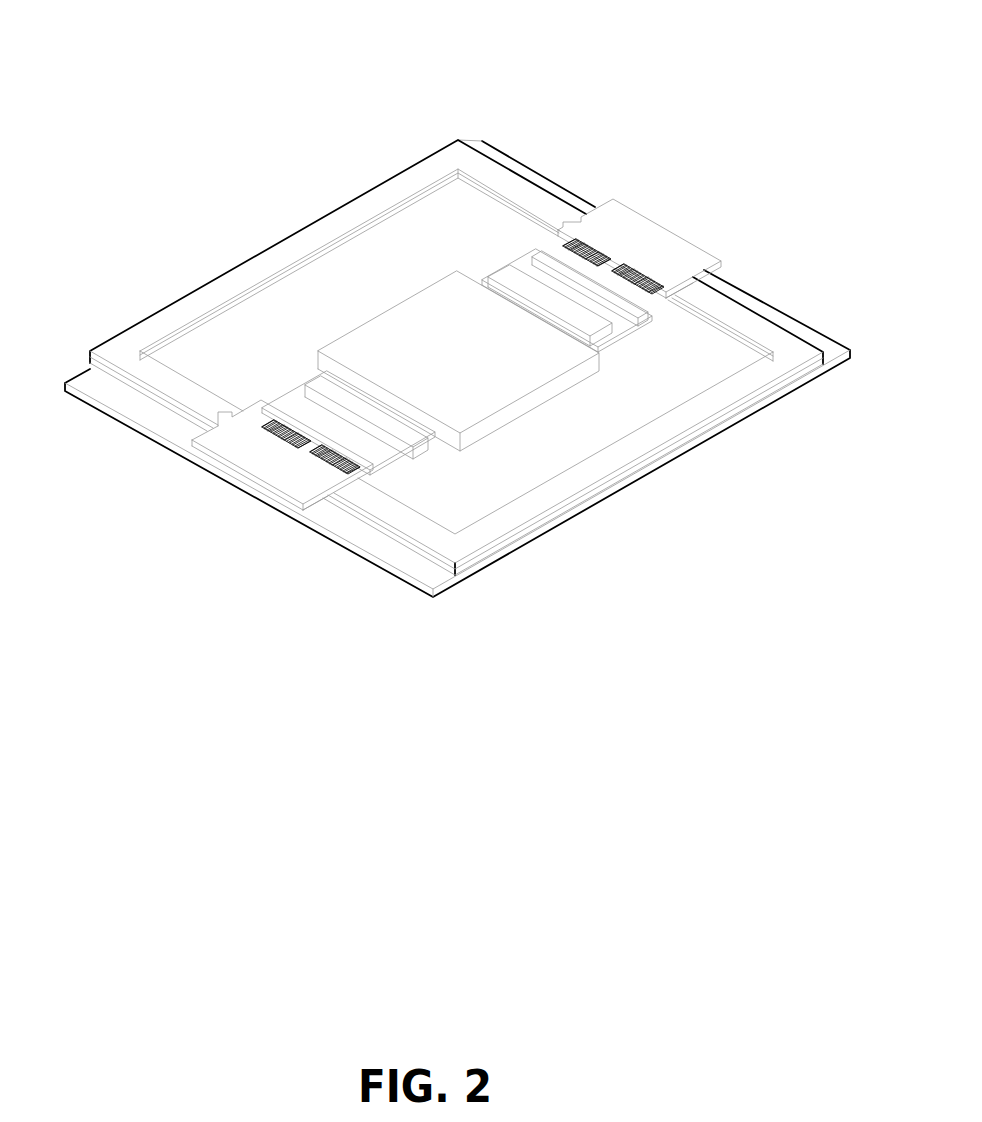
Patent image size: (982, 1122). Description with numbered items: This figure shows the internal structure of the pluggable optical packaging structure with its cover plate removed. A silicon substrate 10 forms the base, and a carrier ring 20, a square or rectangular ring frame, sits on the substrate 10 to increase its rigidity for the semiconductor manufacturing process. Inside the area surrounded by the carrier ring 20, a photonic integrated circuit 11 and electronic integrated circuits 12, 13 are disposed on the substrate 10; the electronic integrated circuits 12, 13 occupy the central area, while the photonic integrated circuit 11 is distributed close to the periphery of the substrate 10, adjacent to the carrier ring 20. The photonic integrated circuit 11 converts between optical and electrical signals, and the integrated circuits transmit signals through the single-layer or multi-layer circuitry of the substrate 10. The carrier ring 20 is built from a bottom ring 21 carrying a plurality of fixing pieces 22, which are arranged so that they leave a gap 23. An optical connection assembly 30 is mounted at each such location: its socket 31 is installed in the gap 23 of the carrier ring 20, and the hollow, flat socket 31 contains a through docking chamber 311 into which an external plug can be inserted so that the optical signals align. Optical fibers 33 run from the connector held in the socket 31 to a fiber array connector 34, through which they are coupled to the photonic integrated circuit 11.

The substrate 10 is at (418, 568).
The photonic integrated circuit 11 is at (615, 318).
The electronic integrated circuit 12 is at (426, 333).
The electronic integrated circuit 13 is at (512, 278).
The carrier ring 20 is at (570, 565).
The bottom ring 21 is at (105, 373).
The fixing piece 22 is at (182, 312).
The gap 23 is at (352, 478).
The optical connection assembly 30 is at (492, 50).
The socket 31 is at (615, 223).
The docking chamber 311 is at (342, 483).
The optical fiber 33 is at (587, 255).
The fiber array connector 34 is at (545, 257).